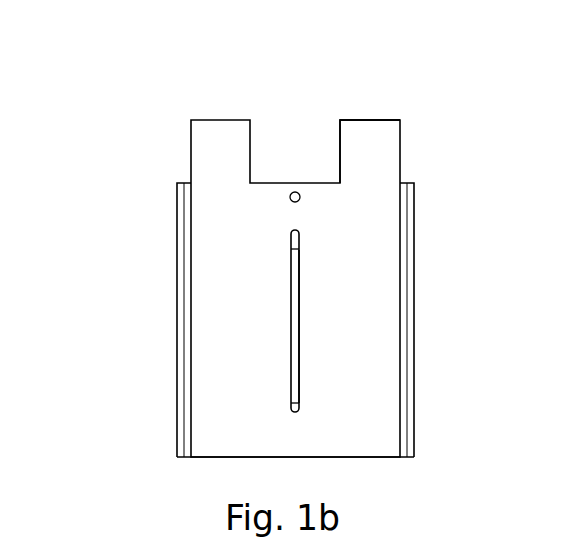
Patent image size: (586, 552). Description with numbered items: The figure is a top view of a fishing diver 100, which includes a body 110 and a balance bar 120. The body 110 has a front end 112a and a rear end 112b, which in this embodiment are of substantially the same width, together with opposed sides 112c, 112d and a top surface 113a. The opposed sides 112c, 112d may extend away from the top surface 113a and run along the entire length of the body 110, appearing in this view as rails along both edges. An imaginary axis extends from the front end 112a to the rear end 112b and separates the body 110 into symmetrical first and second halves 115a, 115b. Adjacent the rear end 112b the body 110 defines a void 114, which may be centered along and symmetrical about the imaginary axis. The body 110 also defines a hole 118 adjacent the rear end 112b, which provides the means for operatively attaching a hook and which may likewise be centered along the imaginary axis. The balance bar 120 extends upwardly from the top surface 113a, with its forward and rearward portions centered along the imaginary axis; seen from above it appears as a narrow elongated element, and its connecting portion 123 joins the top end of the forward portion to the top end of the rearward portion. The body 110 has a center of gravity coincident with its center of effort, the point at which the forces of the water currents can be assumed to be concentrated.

The fishing diver 100 is at (134, 107).
The body 110 is at (405, 146).
The front end 112a is at (383, 457).
The rear end 112b is at (377, 120).
The side 112c is at (413, 418).
The side 112d is at (178, 423).
The top surface 113a is at (263, 365).
The void 114 is at (348, 125).
The first half 115a is at (365, 269).
The second half 115b is at (210, 246).
The hole 118 is at (291, 193).
The balance bar 120 is at (284, 308).
The connecting portion 123 is at (299, 336).